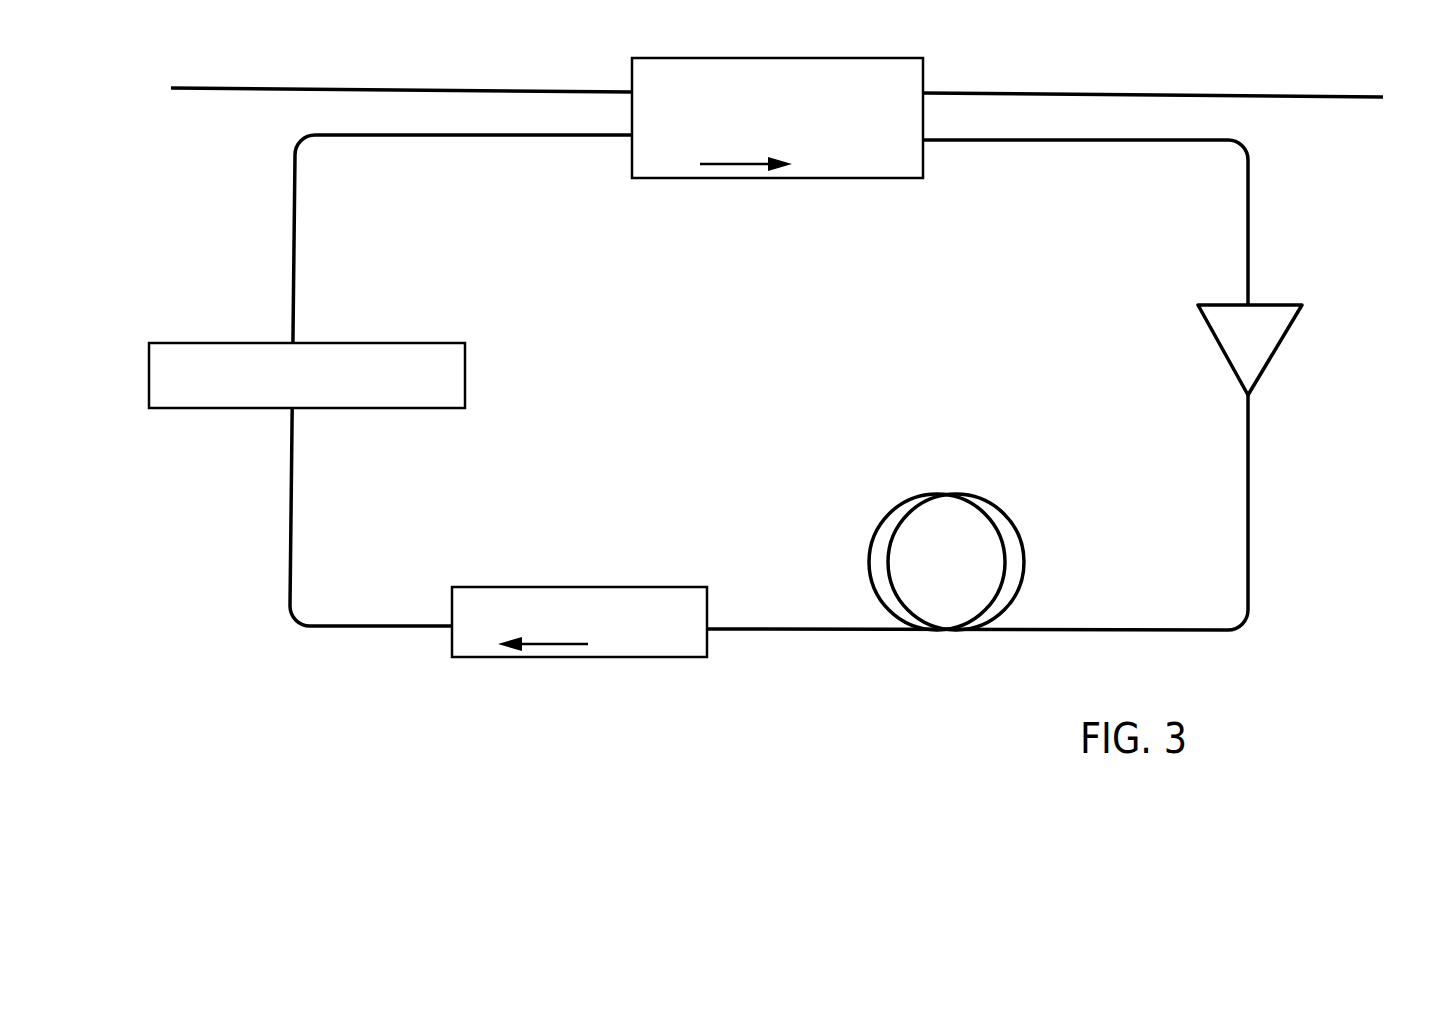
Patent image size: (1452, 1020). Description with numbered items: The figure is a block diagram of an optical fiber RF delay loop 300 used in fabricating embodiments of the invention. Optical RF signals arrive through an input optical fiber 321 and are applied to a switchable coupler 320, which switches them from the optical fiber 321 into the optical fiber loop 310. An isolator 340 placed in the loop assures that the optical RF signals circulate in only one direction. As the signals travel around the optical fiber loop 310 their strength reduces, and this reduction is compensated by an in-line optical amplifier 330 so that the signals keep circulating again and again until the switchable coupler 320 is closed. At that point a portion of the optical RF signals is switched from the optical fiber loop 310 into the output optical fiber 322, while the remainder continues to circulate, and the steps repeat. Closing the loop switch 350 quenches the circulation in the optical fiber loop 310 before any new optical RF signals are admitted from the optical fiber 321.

The optical fiber RF delay loop 300 is at (1450, 630).
The optical fiber loop 310 is at (769, 380).
The switchable coupler 320 is at (777, 97).
The optical fiber 321 is at (401, 69).
The optical fiber 322 is at (1153, 78).
The in-line optical amplifier 330 is at (1273, 350).
The isolator 340 is at (579, 601).
The loop switch 350 is at (307, 355).